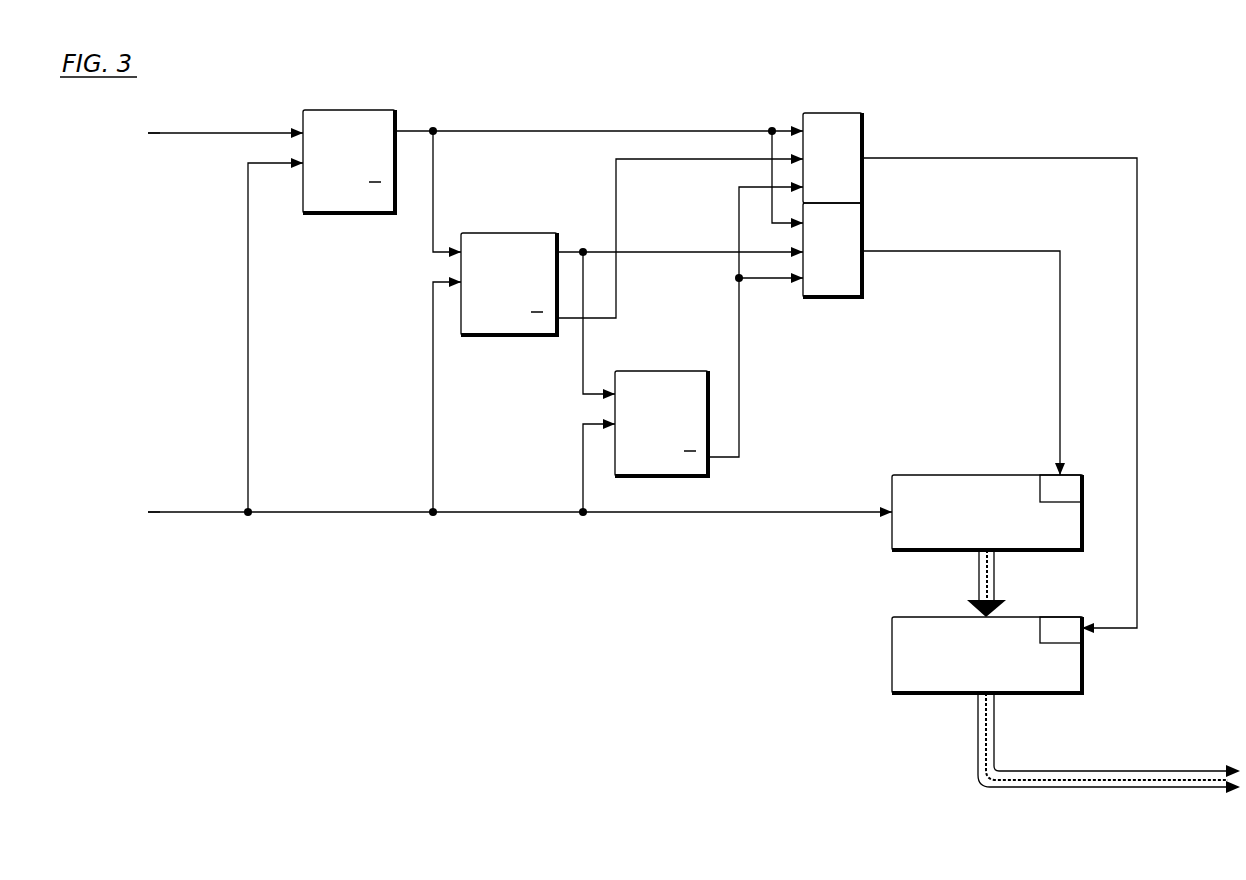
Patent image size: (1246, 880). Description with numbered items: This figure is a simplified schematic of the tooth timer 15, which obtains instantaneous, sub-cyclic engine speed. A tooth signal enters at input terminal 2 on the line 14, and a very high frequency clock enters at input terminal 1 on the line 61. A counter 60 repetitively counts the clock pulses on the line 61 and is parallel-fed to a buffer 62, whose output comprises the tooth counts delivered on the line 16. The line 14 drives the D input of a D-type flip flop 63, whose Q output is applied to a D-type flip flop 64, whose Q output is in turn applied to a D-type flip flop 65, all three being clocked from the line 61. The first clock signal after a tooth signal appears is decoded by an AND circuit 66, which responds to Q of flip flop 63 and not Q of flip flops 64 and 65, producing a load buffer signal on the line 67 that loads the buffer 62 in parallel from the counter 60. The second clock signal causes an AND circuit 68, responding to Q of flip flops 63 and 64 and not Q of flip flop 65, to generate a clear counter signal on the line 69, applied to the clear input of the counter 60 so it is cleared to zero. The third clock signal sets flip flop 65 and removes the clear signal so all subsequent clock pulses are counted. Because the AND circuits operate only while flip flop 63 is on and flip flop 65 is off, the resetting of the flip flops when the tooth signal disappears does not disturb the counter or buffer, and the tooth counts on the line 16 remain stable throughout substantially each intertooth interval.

The clock input terminal 1 is at (145, 513).
The tooth signal input terminal 2 is at (139, 131).
The tooth signal line 14 is at (262, 128).
The tooth timer 15 is at (1018, 114).
The tooth counts line 16 is at (1130, 780).
The counter 60 is at (960, 475).
The clock line 61 is at (760, 511).
The buffer 62 is at (892, 652).
The D-type flip flop 63 is at (345, 110).
The D-type flip flop 64 is at (505, 233).
The D-type flip flop 65 is at (657, 371).
The AND circuit 66 is at (832, 113).
The load buffer line 67 is at (1084, 155).
The AND circuit 68 is at (832, 289).
The clear counter line 69 is at (1060, 342).